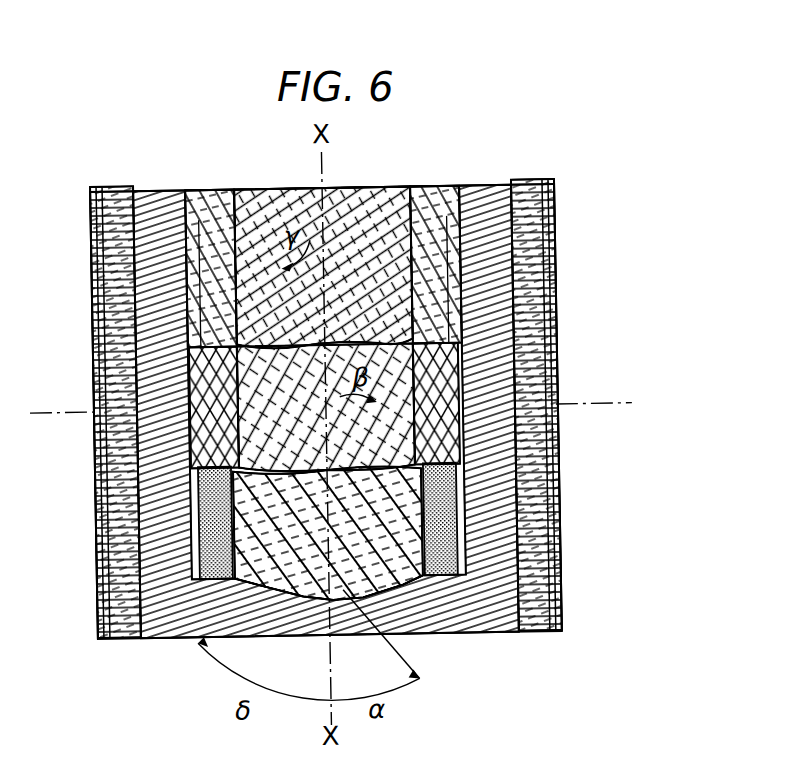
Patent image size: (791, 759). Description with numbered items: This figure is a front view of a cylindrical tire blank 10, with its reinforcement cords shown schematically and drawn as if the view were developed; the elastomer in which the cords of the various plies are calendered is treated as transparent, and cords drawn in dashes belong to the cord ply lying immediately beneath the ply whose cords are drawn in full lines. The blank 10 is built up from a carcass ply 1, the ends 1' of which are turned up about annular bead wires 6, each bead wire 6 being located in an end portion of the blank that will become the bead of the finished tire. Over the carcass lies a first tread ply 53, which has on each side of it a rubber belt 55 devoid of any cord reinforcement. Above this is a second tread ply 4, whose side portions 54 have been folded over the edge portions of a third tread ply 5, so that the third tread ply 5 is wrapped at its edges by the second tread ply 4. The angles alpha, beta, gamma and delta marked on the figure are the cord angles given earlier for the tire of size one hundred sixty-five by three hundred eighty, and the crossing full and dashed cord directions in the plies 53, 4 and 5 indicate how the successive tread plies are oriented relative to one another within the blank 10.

The carcass ply 1 is at (325, 392).
The ends of the carcass ply 1' is at (115, 392).
The second tread ply 4 is at (308, 412).
The third tread ply 5 is at (366, 198).
The annular bead wires 6 is at (97, 596).
The cylindrical tire blank 10 is at (571, 262).
The first tread ply 53 is at (310, 530).
The side portions of the second tread ply 54 is at (215, 198).
The rubber belt 55 is at (205, 560).